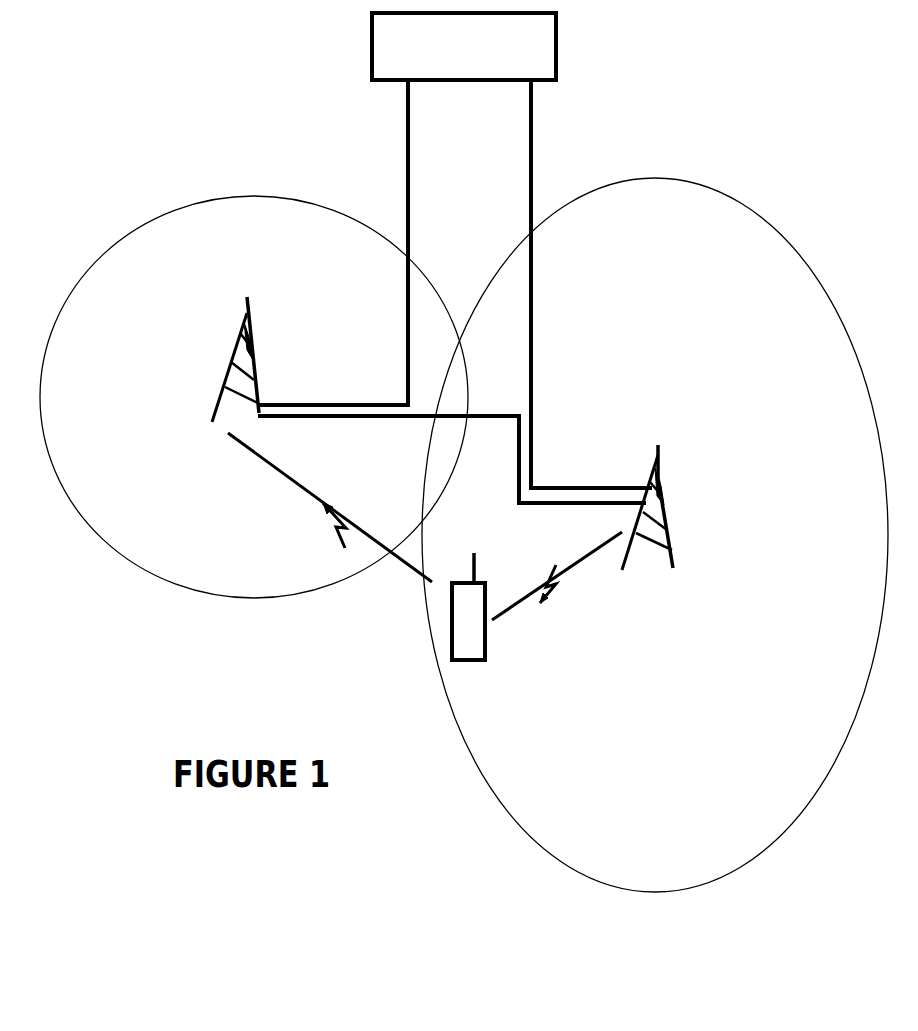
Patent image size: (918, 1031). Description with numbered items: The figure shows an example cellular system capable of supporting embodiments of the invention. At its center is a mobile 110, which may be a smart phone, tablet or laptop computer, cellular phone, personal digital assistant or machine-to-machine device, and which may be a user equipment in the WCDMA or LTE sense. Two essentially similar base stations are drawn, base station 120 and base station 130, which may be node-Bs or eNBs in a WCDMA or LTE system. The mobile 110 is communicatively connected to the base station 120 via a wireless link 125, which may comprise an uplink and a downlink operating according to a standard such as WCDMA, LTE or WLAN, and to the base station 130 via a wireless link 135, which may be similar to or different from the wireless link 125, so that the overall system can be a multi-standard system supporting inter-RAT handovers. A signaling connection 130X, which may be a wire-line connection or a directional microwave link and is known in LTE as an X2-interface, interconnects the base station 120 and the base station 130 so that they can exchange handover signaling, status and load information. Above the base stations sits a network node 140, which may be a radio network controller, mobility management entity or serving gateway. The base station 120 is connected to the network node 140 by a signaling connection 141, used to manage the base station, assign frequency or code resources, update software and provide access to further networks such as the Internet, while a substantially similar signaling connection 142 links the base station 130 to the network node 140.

The mobile 110 is at (473, 626).
The base station 120 is at (668, 507).
The wireless link 125 is at (557, 584).
The base station 130 is at (221, 359).
The signaling connection 130X is at (452, 459).
The wireless link 135 is at (330, 509).
The network node 140 is at (464, 46).
The signaling connection 141 is at (591, 284).
The signaling connection 142 is at (333, 242).